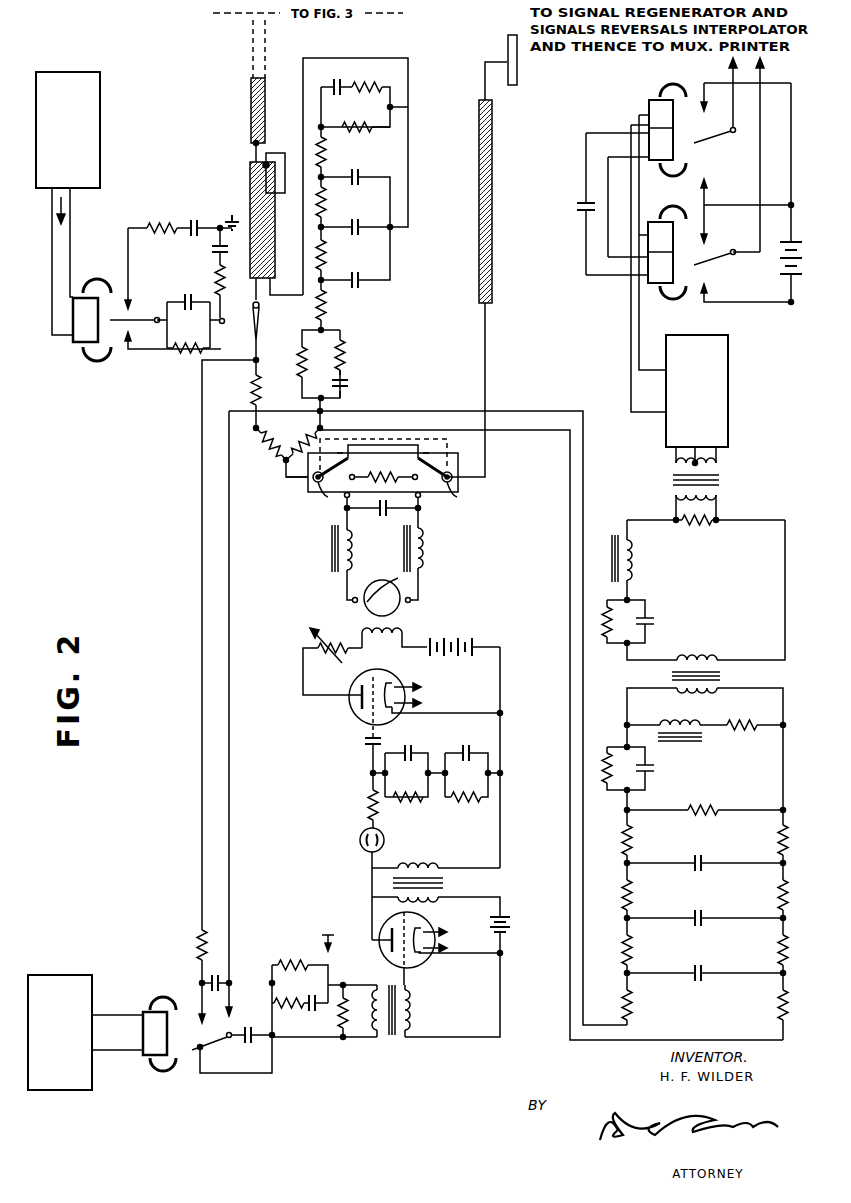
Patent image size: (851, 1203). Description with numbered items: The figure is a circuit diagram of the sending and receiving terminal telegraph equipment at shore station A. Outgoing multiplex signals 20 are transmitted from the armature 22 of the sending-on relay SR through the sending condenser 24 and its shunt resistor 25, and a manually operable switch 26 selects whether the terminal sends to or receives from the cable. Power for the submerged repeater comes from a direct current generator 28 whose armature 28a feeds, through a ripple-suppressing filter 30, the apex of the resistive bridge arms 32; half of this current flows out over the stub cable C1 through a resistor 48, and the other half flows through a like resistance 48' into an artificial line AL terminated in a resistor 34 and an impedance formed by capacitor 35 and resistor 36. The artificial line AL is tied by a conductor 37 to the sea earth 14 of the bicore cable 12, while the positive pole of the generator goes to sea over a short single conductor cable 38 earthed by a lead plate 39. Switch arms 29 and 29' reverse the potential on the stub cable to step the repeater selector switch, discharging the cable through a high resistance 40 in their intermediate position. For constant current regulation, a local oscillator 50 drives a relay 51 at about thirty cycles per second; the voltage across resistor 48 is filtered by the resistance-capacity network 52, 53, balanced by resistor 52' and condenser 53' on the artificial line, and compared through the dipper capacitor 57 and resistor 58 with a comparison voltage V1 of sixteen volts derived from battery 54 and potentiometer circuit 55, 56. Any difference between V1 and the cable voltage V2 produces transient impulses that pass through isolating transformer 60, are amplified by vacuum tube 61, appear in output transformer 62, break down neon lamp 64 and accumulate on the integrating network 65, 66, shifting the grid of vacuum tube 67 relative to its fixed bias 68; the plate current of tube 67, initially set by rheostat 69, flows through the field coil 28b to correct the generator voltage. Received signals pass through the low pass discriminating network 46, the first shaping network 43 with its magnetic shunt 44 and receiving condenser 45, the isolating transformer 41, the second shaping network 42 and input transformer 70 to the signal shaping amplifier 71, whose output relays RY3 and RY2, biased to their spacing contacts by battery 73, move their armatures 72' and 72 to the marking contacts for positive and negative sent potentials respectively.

The outgoing multiplex signals source 20 is at (96, 96).
The bicore cable 12 is at (250, 186).
The sea earth 14 is at (281, 193).
The stub cable C1 is at (251, 98).
The armature 22 is at (134, 318).
The sending condenser 24 is at (188, 300).
The shunt resistor 25 is at (190, 350).
The manually operable switch 26 is at (259, 316).
The resistor 48 is at (267, 375).
The resistive bridge arms 32 is at (288, 437).
The shore station A is at (470, 700).
The sending-on relay SR is at (94, 320).
The conductor 37 is at (338, 58).
The capacitor 35 is at (342, 98).
The resistor 36 is at (367, 100).
The resistor 34 is at (357, 134).
The artificial line AL is at (430, 148).
The resistance 48' is at (318, 364).
The resistor 52' is at (356, 348).
The condenser 53' is at (354, 385).
The single conductor cable 38 is at (479, 214).
The lead plate 39 is at (507, 55).
The switch arm 29 is at (372, 484).
The switch arm 29' is at (442, 492).
The high resistance 40 is at (380, 481).
The generator armature 28a is at (350, 542).
The filter 30 is at (412, 538).
The direct current generator 28 is at (356, 612).
The field coil 28b is at (410, 635).
The rheostat 69 is at (334, 656).
The vacuum tube 67 is at (352, 700).
The fixed bias voltage 68 is at (364, 741).
The condenser integrating network 65 is at (418, 766).
The condenser integrating network 66 is at (474, 766).
The neon lamp 64 is at (385, 838).
The amplifier output transformer 62 is at (385, 870).
The vacuum tube amplifier 61 is at (415, 966).
The isolating transformer 60 is at (395, 1048).
The resistor 58 is at (346, 1015).
The resistor 56 is at (289, 967).
The comparison voltage V1 is at (300, 945).
The battery 54 is at (311, 1009).
The potentiometer circuit 55 is at (242, 1019).
The dipper capacitor 57 is at (243, 1041).
The voltage from the cable V2 is at (236, 1002).
The condenser 53 is at (216, 967).
The resistance 52 is at (187, 933).
The relay 51 is at (143, 1030).
The local oscillator 50 is at (68, 975).
The output relay RY3 is at (650, 118).
The relay contact 72' is at (742, 155).
The output relay RY2 is at (648, 275).
The relay contact 72 is at (748, 194).
The battery 73 is at (577, 206).
The signal shaping amplifier 71 is at (728, 352).
The input transformer 70 is at (665, 472).
The second shaping network 42 is at (605, 567).
The isolating transformer 41 is at (652, 663).
The magnetic shunt 44 is at (665, 722).
The first shaping network 43 is at (605, 710).
The receiving condenser 45 is at (656, 768).
The higher frequency discriminating network 46 is at (601, 910).